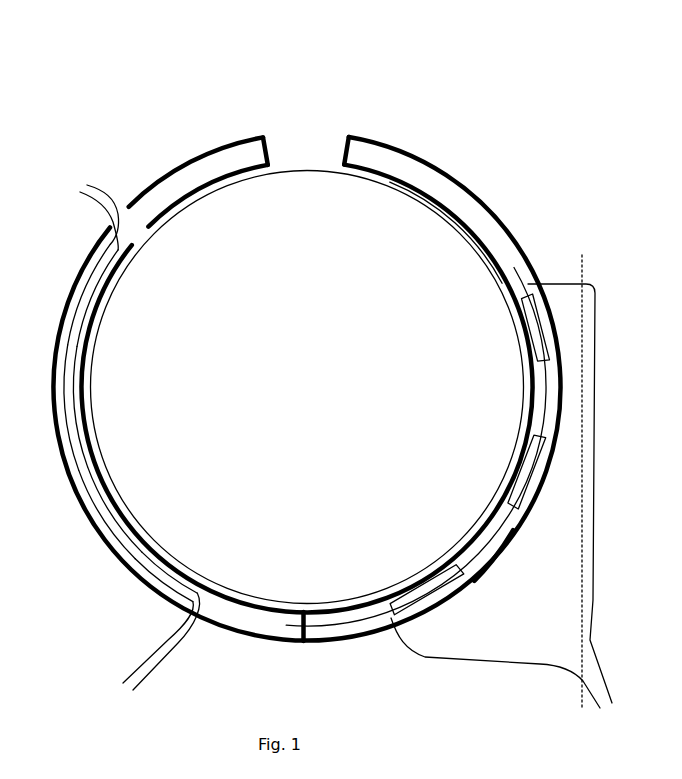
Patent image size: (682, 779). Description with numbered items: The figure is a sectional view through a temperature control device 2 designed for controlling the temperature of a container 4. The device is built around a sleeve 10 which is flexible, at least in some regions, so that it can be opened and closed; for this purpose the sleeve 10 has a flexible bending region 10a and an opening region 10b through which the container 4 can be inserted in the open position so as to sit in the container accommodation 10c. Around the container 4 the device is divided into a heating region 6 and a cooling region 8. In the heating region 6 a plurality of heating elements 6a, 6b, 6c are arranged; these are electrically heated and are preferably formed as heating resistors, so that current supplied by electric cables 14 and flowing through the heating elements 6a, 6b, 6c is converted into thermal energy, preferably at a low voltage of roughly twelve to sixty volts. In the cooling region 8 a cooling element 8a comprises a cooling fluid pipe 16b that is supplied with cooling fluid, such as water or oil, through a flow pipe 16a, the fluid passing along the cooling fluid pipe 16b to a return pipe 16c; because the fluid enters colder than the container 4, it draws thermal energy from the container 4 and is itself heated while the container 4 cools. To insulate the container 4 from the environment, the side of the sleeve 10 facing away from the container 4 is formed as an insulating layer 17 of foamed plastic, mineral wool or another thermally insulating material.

The temperature control device 2 is at (66, 90).
The container 4 is at (92, 404).
The heating region 6 is at (522, 273).
The heating element 6a is at (436, 604).
The heating element 6b is at (523, 490).
The heating element 6c is at (535, 328).
The cooling region 8 is at (93, 500).
The cooling element 8a is at (67, 437).
The sleeve 10 is at (472, 213).
The flexible bending region 10a is at (304, 642).
The opening region 10b is at (311, 146).
The container accommodation 10c is at (455, 230).
The electric cables 14 is at (595, 487).
The flow pipe 16a is at (120, 208).
The cooling fluid pipe 16b is at (83, 300).
The return pipe 16c is at (201, 618).
The insulating layer 17 is at (503, 553).